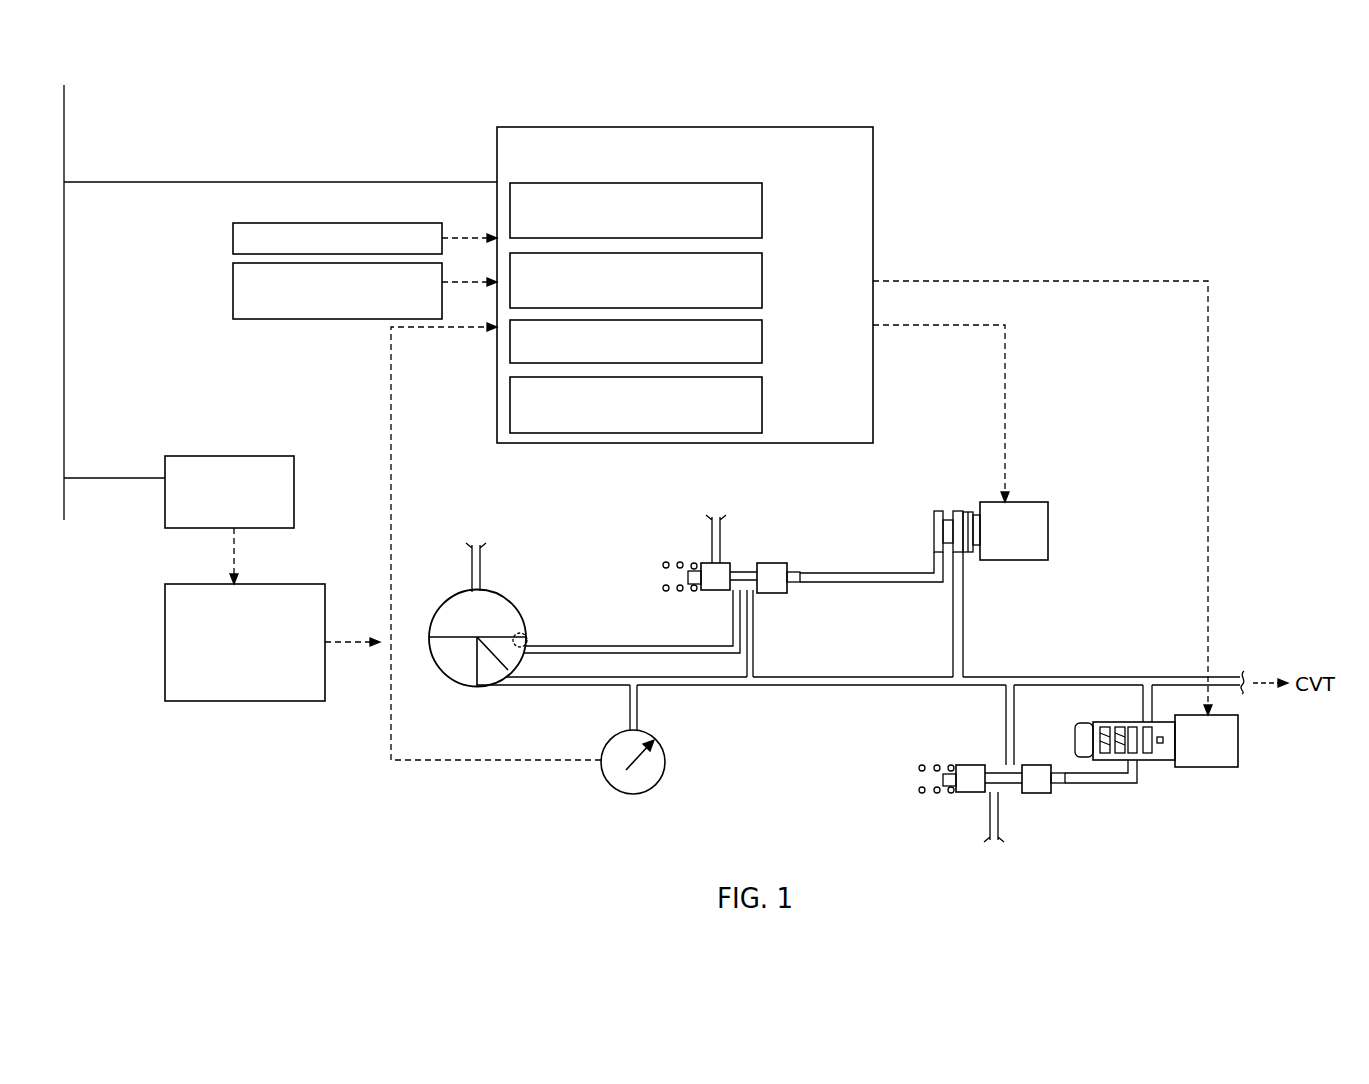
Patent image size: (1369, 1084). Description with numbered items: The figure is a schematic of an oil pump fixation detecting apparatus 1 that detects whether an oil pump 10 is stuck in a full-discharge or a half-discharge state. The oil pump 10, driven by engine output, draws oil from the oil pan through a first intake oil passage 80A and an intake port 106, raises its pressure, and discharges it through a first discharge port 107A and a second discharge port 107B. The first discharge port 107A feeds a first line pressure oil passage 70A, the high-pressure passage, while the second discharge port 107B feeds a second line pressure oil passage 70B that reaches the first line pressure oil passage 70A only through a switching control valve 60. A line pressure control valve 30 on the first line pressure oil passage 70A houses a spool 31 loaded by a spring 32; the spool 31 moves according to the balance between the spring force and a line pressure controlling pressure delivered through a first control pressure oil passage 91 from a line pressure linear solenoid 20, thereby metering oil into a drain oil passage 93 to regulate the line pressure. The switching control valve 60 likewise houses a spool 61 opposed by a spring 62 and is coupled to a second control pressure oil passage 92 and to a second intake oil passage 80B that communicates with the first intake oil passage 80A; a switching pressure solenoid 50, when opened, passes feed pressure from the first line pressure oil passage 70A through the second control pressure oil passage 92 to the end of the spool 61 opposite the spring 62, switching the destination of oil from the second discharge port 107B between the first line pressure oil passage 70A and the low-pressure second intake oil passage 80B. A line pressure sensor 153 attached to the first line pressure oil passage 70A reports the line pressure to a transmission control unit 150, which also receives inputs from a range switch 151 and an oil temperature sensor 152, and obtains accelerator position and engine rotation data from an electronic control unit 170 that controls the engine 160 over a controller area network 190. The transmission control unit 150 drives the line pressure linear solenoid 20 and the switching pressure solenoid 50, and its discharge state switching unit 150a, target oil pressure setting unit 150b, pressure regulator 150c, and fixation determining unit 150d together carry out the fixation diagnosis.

The oil pump fixation detecting apparatus 1 is at (906, 180).
The oil pump 10 is at (457, 597).
The line pressure linear solenoid 20 is at (1207, 769).
The line pressure control valve 30 is at (910, 759).
The spool 31 is at (968, 764).
The spring 32 is at (937, 796).
The switching pressure solenoid 50 is at (1040, 501).
The switching control valve 60 is at (750, 554).
The spool 61 is at (716, 592).
The spring 62 is at (679, 596).
The first line pressure oil passage 70A is at (756, 641).
The second line pressure oil passage 70B is at (628, 645).
The first intake oil passage 80A is at (484, 566).
The second intake oil passage 80B is at (710, 536).
The first control pressure oil passage 91 is at (1112, 786).
The second control pressure oil passage 92 is at (842, 572).
The drain oil passage 93 is at (1000, 815).
The intake port 106 is at (481, 603).
The first discharge port 107A is at (483, 689).
The second discharge port 107B is at (529, 640).
The transmission control unit 150 is at (873, 250).
The discharge state switching unit 150a is at (762, 211).
The target oil pressure setting unit 150b is at (762, 281).
The pressure regulator 150c is at (762, 343).
The fixation determining unit 150d is at (762, 411).
The range switch 151 is at (233, 238).
The oil temperature sensor 152 is at (233, 282).
The line pressure sensor 153 is at (664, 777).
The engine 160 is at (165, 642).
The electronic control unit 170 is at (165, 503).
The controller area network 190 is at (64, 345).